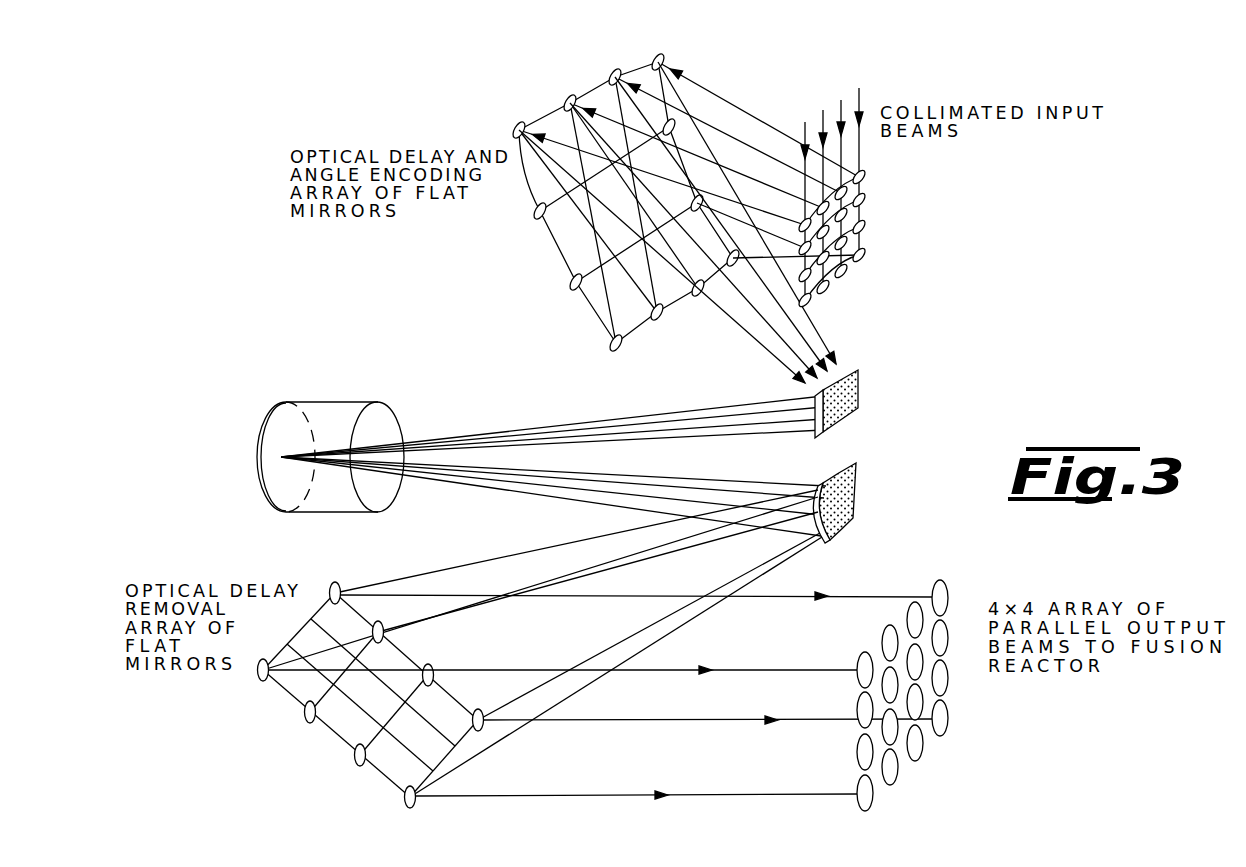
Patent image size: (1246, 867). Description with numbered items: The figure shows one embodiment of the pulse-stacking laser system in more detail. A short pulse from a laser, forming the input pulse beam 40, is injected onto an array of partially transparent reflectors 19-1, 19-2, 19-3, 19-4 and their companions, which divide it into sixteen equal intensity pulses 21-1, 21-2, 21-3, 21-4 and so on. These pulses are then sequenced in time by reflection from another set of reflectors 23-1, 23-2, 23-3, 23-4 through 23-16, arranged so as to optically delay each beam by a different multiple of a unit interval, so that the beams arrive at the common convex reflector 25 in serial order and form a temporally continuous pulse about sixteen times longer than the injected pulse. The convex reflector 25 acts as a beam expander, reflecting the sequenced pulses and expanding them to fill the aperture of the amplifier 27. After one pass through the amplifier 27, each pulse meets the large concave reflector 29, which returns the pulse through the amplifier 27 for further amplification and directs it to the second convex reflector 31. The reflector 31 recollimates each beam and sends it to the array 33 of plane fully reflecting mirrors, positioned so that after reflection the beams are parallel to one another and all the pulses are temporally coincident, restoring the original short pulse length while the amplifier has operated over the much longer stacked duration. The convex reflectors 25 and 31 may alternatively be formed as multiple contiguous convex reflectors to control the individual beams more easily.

The partially transparent reflector 19-1 is at (866, 177).
The partially transparent reflector 19-2 is at (866, 199).
The partially transparent reflector 19-3 is at (866, 225).
The partially transparent reflector 19-4 is at (866, 251).
The equal intensity pulse 21-1 is at (829, 351).
The equal intensity pulse 21-2 is at (794, 326).
The equal intensity pulse 21-3 is at (790, 355).
The equal intensity pulse 21-4 is at (763, 345).
The delay reflector 23-1 is at (668, 64).
The delay reflector 23-2 is at (617, 72).
The delay reflector 23-3 is at (571, 97).
The delay reflector 23-4 is at (515, 126).
The delay reflector 23-16 is at (607, 343).
The convex reflector 25 is at (862, 371).
The amplifier 27 is at (335, 442).
The concave reflector 29 is at (258, 478).
The second convex reflector 31 is at (856, 467).
The array of plane reflectors 33 is at (367, 695).
The input pulse beam 40 is at (860, 80).